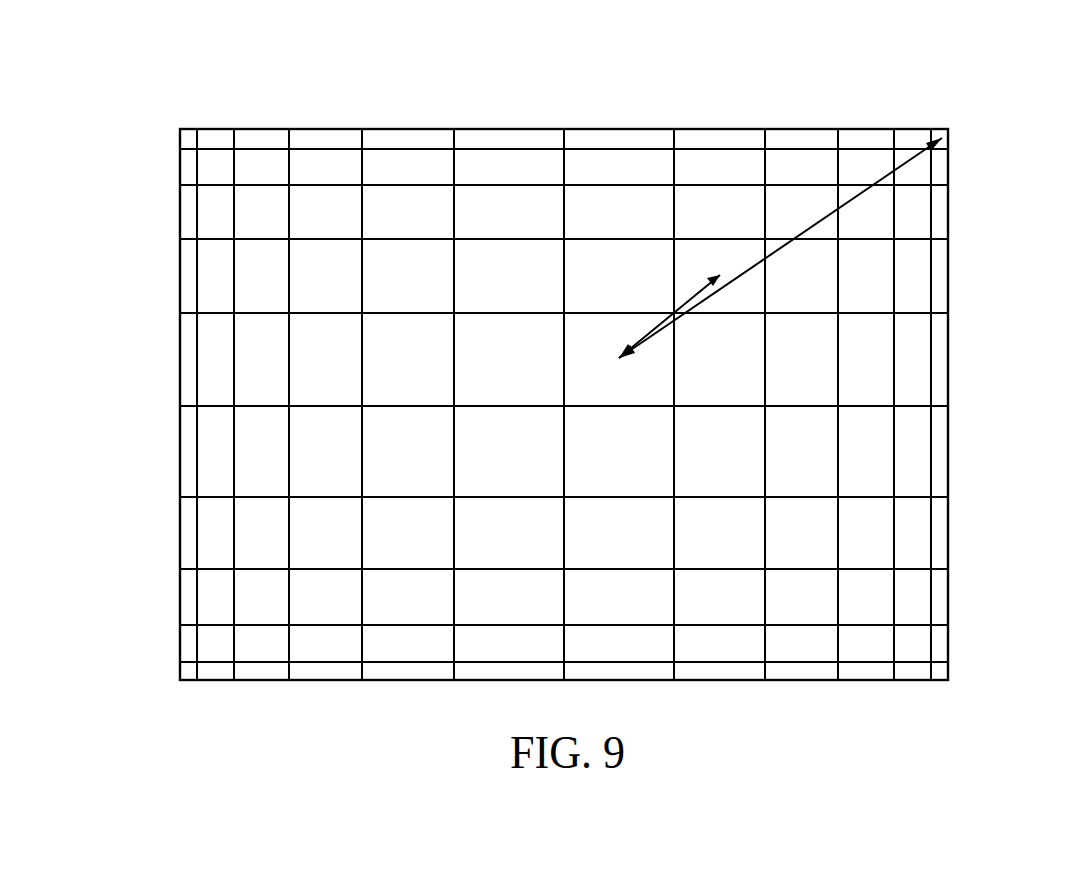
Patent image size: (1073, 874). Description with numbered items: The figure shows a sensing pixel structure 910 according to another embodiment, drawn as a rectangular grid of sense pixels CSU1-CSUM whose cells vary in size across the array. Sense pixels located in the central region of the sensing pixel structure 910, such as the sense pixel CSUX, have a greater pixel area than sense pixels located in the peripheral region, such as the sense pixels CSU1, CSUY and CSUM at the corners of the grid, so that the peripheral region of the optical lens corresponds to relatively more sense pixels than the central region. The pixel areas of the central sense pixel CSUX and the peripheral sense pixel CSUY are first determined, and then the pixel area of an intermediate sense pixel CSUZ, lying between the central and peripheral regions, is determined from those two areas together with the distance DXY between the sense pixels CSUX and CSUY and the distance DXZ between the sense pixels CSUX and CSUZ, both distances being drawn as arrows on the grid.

The sensing pixel structure 910 is at (923, 96).
The sense pixel CSU1 is at (186, 139).
The sense pixel CSUY is at (945, 134).
The sense pixel CSUM is at (942, 670).
The sense pixel CSUX is at (619, 359).
The sense pixel CSUZ is at (719, 276).
The distance DXY is at (780, 248).
The distance DXZ is at (669, 316).